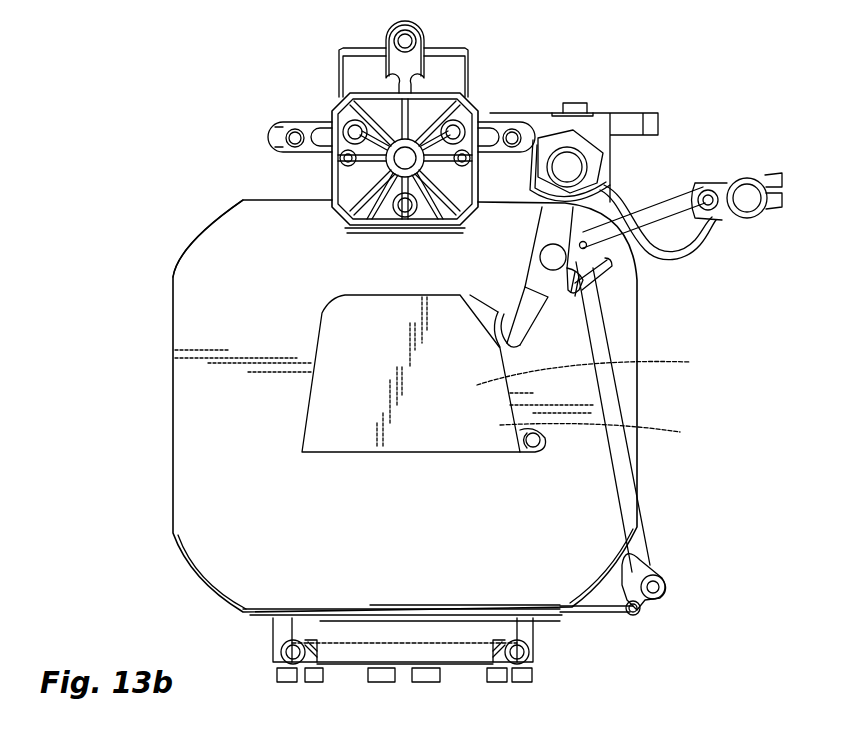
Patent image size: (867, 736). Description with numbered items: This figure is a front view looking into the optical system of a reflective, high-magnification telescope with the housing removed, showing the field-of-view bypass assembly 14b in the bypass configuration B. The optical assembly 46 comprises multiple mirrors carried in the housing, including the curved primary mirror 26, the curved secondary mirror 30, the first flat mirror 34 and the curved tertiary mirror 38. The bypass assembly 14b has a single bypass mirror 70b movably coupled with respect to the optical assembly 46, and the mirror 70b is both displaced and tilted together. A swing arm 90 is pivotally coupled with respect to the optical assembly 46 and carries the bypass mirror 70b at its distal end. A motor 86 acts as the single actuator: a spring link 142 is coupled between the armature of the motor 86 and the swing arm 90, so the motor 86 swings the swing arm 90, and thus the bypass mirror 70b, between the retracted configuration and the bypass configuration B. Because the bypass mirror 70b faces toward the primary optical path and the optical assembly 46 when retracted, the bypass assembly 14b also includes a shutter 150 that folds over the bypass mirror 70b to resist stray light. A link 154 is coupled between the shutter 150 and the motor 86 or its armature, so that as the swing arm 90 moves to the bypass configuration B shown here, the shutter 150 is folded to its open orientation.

The curved primary mirror 26 is at (237, 580).
The optical assembly 46 is at (196, 226).
The first flat mirror 34 is at (452, 74).
The curved secondary mirror 30 is at (360, 120).
The spring link 142 is at (615, 205).
The swing arm 90 is at (523, 258).
The motor 86 is at (745, 192).
The bypass mirror 70b is at (477, 385).
The field-of-view bypass assembly 14b is at (500, 425).
The link 154 is at (625, 485).
The bypass configuration B is at (470, 450).
The curved tertiary mirror 38 is at (277, 633).
The shutter 150 is at (590, 612).